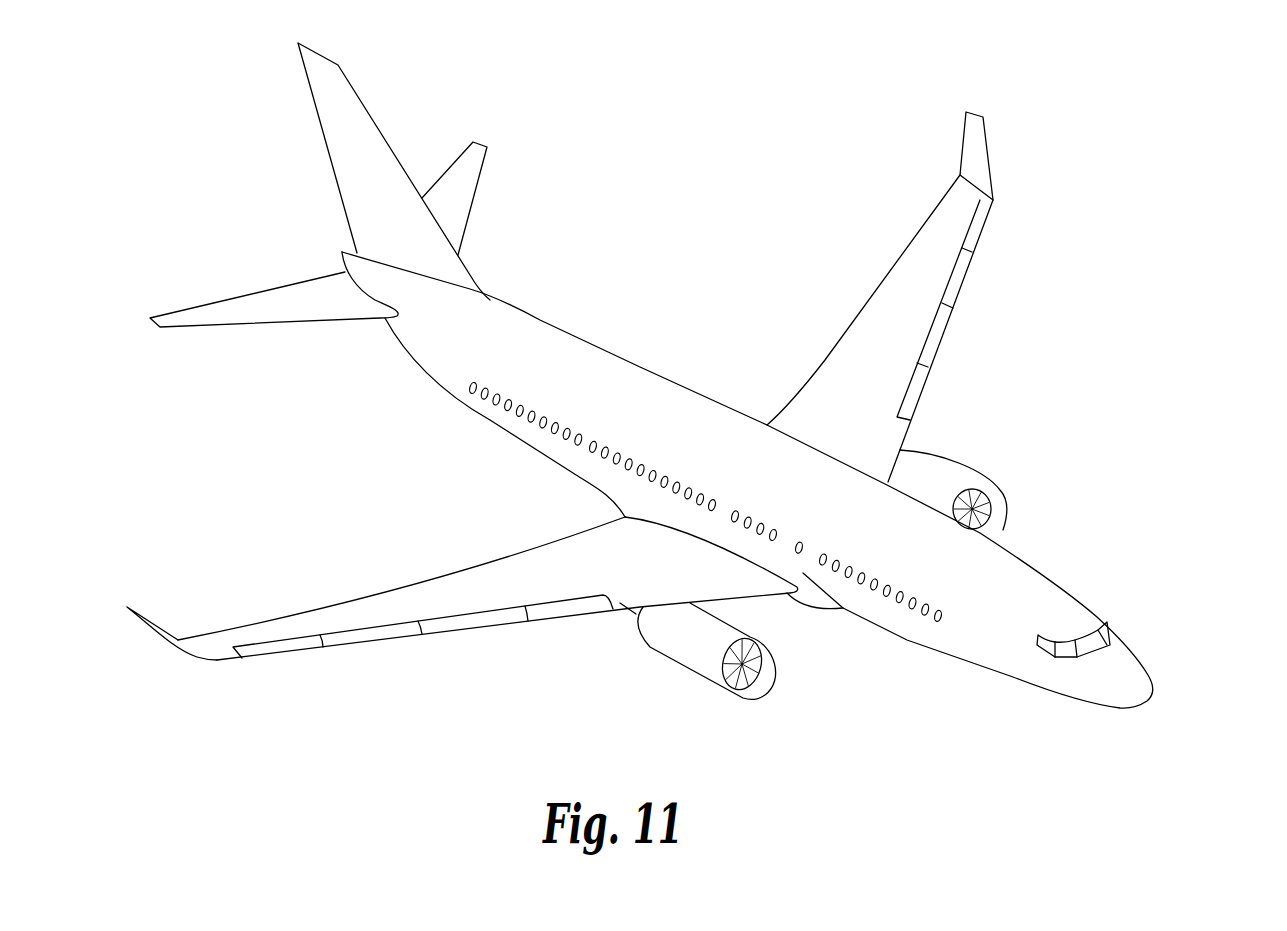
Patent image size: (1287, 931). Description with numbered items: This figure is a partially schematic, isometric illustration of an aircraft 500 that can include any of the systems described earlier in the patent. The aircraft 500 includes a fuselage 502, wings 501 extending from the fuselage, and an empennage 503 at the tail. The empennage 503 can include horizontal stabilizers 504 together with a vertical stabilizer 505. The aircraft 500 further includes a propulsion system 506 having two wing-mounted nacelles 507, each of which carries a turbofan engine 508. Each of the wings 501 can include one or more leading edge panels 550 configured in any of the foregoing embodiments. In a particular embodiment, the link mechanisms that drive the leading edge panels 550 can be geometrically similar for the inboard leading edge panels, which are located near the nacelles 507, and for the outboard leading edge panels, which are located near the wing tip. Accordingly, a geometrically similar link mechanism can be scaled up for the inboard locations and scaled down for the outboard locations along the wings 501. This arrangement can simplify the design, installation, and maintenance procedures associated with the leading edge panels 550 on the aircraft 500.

The aircraft 500 is at (1123, 379).
The wings 501 is at (357, 613).
The fuselage 502 is at (1047, 580).
The empennage 503 is at (516, 261).
The horizontal stabilizers 504 is at (473, 172).
The vertical stabilizer 505 is at (367, 130).
The propulsion system 506 is at (806, 692).
The nacelles 507 is at (673, 650).
The turbofan engine 508 is at (755, 692).
The leading edge panels 550 is at (363, 637).